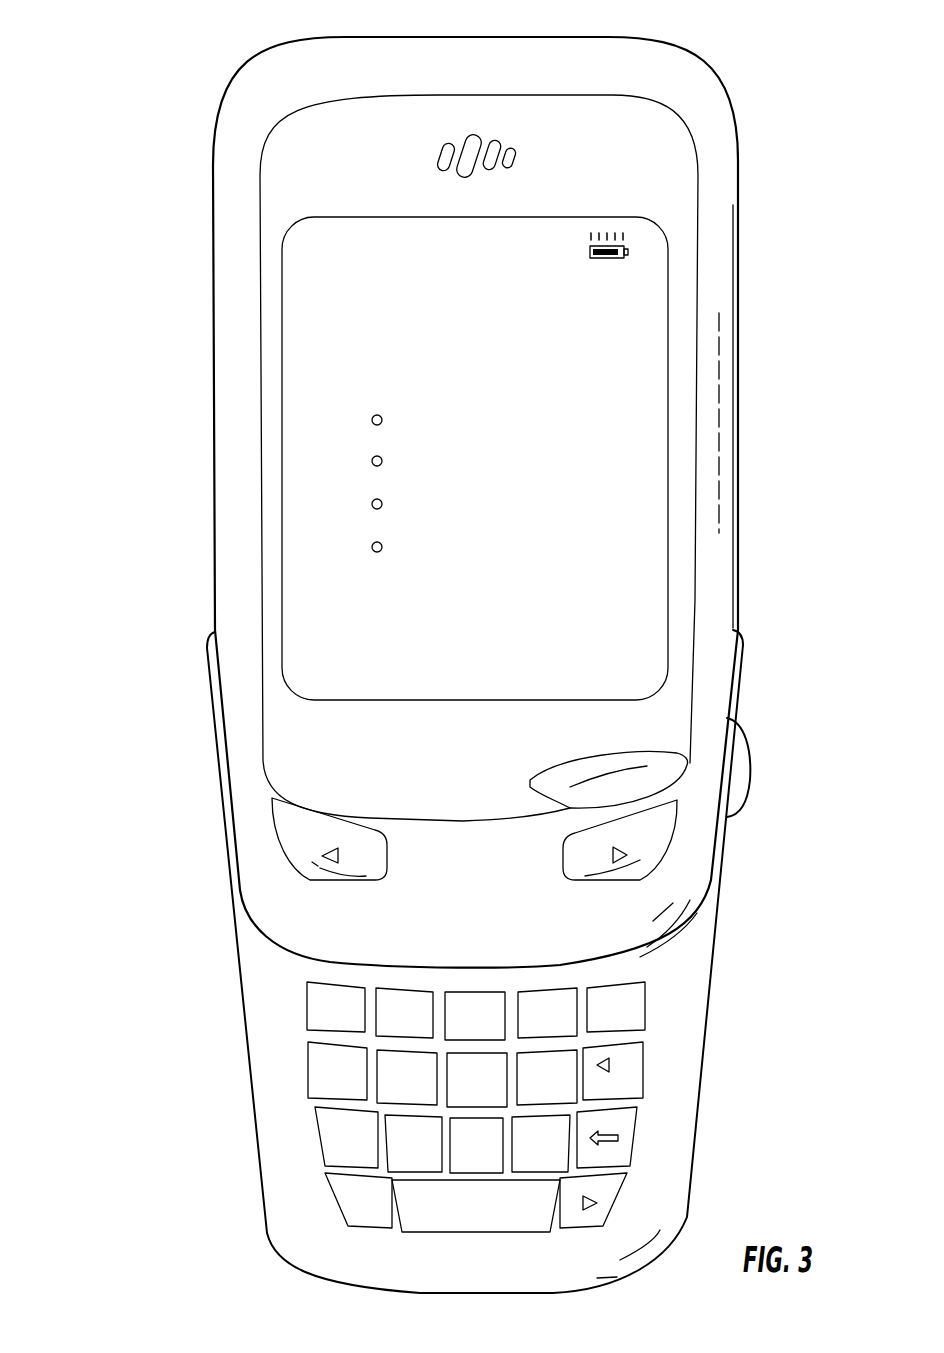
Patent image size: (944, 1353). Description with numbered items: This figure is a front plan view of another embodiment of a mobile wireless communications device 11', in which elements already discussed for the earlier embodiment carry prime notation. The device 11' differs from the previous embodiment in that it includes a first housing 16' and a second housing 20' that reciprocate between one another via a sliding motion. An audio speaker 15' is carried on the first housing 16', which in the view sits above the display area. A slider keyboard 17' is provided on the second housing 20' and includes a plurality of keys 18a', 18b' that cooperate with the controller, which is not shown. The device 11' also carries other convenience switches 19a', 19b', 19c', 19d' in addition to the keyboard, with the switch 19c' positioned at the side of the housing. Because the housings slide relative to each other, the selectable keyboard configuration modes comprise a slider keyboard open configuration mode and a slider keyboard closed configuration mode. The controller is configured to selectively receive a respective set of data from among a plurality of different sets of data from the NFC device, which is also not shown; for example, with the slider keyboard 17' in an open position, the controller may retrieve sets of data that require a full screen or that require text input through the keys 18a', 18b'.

The mobile wireless communications device 11' is at (455, 646).
The audio speaker 15' is at (407, 89).
The first housing 16' is at (497, 502).
The slider keyboard 17' is at (451, 1108).
The key 18a' is at (232, 1022).
The key 18b' is at (283, 1071).
The convenience switch 19a' is at (266, 839).
The convenience switch 19b' is at (684, 840).
The convenience switch 19c' is at (786, 767).
The convenience switch 19d' is at (670, 743).
The second housing 20' is at (488, 961).